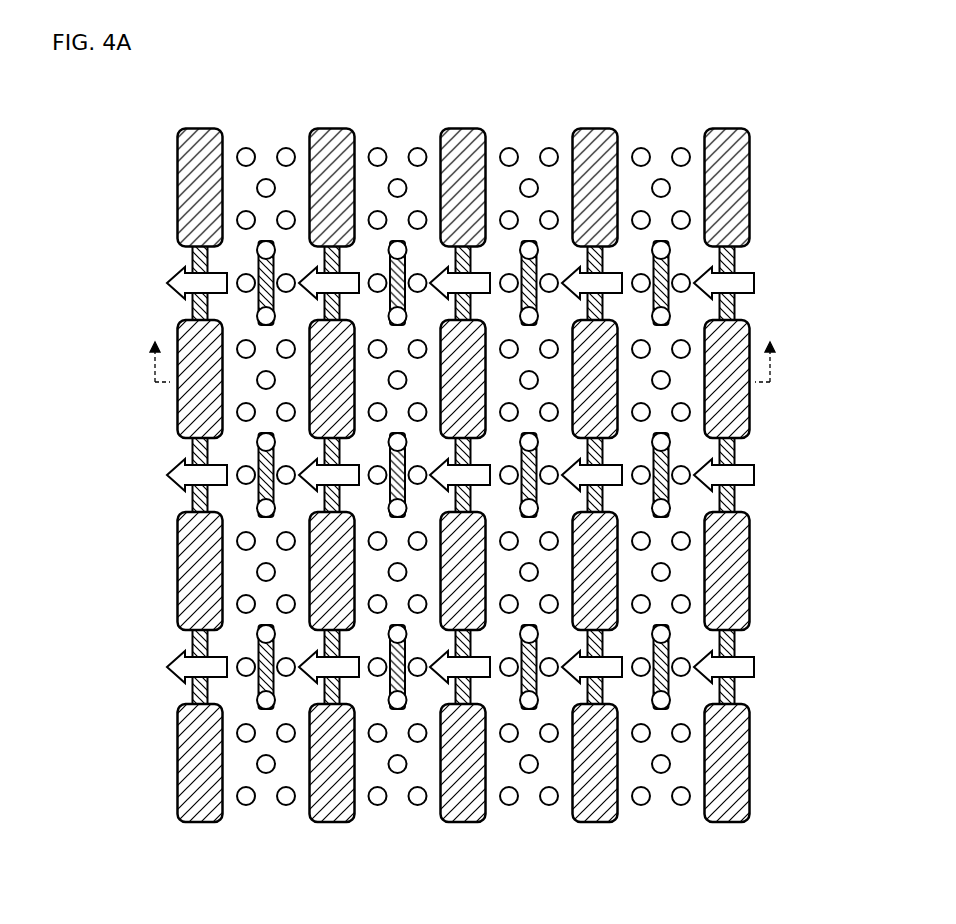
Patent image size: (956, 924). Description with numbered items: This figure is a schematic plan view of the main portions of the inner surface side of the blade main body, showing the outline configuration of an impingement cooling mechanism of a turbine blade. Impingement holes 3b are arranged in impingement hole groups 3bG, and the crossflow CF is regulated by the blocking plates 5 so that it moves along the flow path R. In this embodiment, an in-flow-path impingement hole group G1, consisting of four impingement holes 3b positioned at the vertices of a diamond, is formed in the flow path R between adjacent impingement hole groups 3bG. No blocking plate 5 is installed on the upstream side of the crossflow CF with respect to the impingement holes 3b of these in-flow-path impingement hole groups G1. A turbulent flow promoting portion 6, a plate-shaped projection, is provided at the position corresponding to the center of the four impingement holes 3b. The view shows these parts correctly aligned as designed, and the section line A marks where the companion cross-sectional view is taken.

The blocking plate 5 is at (190, 196).
The turbulent flow promoting portion 6 is at (262, 312).
The flow path R is at (240, 268).
The crossflow CF is at (185, 289).
The impingement hole 3b is at (378, 147).
The impingement hole group 3bG is at (518, 470).
The in-flow-path impingement hole group G1 is at (684, 268).
The A-A line A is at (463, 363).